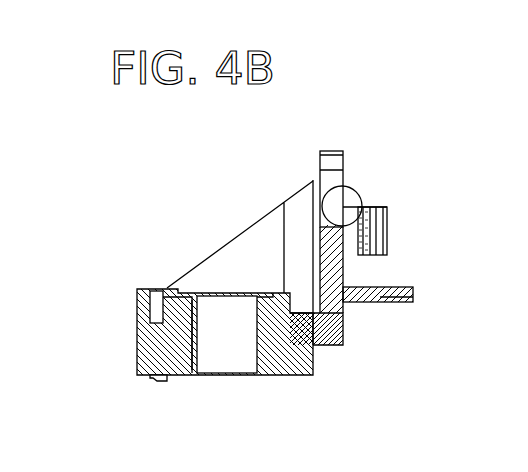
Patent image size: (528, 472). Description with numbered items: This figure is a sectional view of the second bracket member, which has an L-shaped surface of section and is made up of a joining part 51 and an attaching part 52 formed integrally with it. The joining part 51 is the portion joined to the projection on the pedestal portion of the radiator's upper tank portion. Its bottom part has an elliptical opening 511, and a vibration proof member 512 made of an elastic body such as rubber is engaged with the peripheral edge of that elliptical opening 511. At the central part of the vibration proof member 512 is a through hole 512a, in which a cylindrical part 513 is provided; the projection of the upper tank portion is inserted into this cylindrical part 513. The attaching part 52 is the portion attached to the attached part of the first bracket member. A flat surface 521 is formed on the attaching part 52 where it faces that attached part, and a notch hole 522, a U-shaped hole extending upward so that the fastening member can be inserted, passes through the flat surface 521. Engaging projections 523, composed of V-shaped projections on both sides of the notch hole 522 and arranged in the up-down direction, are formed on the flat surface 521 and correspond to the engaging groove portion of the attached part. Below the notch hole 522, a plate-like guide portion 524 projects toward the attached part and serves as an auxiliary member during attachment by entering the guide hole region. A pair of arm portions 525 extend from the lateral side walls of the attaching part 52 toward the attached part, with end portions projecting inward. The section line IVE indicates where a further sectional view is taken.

The joining part 51 is at (302, 378).
The elliptical opening 511 is at (167, 288).
The vibration proof member 512 is at (166, 376).
The through hole 512a is at (246, 353).
The cylindrical part 513 is at (197, 348).
The attaching part 52 is at (357, 226).
The flat surface 521 is at (343, 328).
The notch hole 522 is at (335, 180).
The engaging projection 523 is at (365, 203).
The guide portion 524 is at (380, 287).
The arm portion 525 is at (387, 213).
The section line IVE- IVE is at (363, 188).